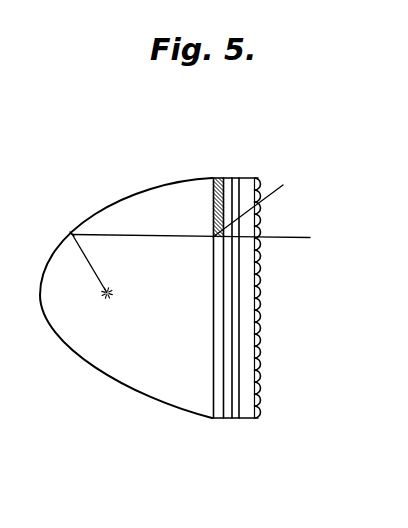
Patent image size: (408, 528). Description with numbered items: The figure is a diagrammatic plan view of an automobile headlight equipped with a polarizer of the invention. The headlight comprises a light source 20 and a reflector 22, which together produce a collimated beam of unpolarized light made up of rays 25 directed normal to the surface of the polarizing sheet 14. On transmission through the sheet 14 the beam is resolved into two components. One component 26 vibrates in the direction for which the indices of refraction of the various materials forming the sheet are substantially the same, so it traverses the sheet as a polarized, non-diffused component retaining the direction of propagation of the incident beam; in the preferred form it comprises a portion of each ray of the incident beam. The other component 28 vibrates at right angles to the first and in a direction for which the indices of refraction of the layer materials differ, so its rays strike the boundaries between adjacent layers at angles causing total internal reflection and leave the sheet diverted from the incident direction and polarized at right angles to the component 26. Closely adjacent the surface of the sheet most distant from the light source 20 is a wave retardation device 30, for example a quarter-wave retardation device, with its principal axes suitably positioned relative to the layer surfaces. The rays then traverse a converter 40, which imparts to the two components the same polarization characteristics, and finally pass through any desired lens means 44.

The polarizing sheet 14 is at (218, 177).
The light source 20 is at (107, 298).
The reflector 22 is at (66, 240).
The rays 25 is at (93, 268).
The component 26 is at (303, 238).
The component 28 is at (276, 194).
The wave retardation device 30 is at (232, 177).
The converter 40 is at (240, 177).
The lens means 44 is at (248, 190).